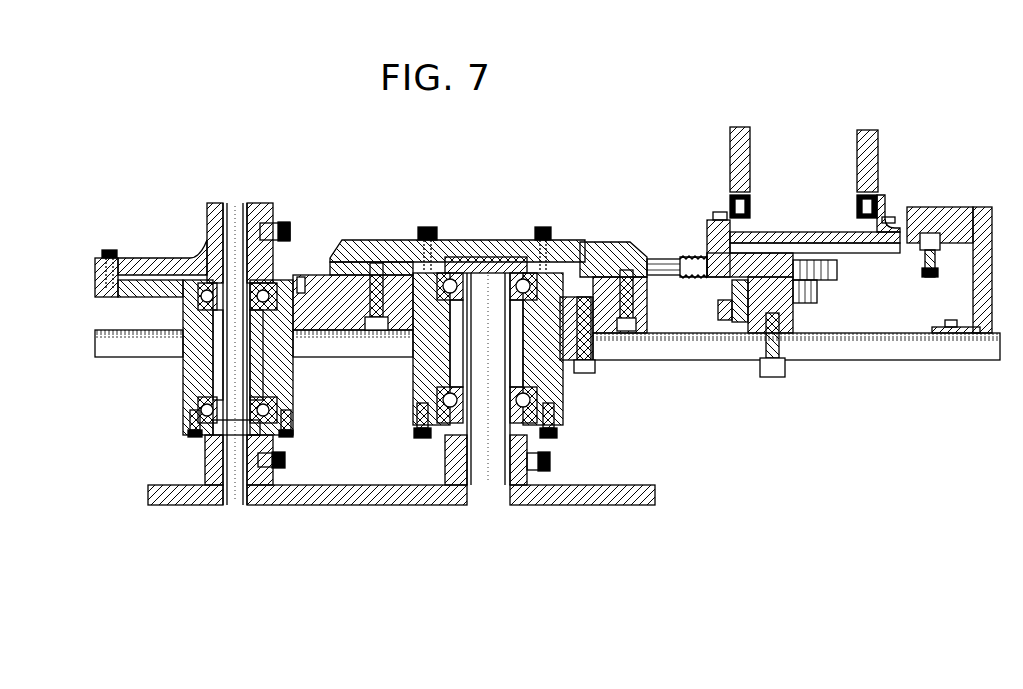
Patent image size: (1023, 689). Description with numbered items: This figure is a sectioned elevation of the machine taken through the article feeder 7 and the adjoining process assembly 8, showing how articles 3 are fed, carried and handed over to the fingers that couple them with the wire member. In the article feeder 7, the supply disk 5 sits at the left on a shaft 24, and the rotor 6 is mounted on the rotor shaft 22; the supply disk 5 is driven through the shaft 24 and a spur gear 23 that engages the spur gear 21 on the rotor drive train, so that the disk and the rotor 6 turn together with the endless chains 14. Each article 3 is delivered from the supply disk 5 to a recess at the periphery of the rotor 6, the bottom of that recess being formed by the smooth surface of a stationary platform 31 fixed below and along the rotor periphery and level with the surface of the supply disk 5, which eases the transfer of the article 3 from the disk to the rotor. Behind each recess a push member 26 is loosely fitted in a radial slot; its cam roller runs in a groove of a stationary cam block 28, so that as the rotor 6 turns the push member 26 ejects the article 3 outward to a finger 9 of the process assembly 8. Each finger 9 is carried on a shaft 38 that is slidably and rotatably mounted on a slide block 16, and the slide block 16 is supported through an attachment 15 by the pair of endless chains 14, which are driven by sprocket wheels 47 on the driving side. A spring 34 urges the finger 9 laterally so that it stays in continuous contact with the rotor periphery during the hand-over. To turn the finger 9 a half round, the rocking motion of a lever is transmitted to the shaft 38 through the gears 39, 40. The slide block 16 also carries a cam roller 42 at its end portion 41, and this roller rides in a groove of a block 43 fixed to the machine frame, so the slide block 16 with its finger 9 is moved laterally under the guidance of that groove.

The article 3 is at (658, 333).
The supply disk 5 is at (183, 262).
The rotor 6 is at (503, 240).
The article feeder 7 is at (385, 240).
The process assembly 8 is at (720, 333).
The finger 9 is at (672, 257).
The endless chains 14 is at (752, 200).
The attachment 15 is at (750, 272).
The slide block 16 is at (753, 347).
The spur gear 21 is at (630, 500).
The rotor shaft 22 is at (485, 505).
The spur gear 23 is at (306, 495).
The shaft 24 is at (240, 497).
The push member 26 is at (594, 243).
The cam block 28 is at (489, 355).
The platform 31 is at (547, 341).
The spring 34 is at (687, 257).
The shaft 38 is at (717, 278).
The gear 39 is at (812, 303).
The gear 40 is at (825, 283).
The end portion 41 is at (875, 253).
The cam roller 42 is at (940, 240).
The block 43 is at (953, 220).
The sprocket wheel 47 is at (750, 160).